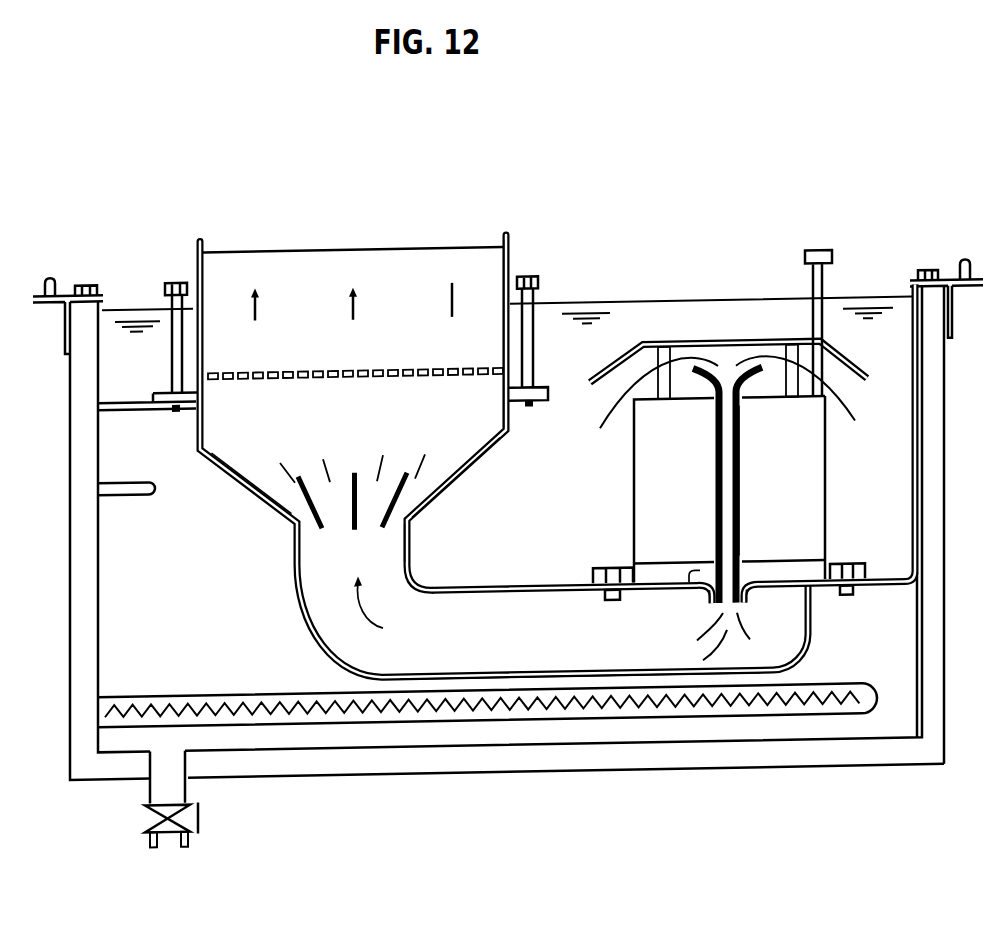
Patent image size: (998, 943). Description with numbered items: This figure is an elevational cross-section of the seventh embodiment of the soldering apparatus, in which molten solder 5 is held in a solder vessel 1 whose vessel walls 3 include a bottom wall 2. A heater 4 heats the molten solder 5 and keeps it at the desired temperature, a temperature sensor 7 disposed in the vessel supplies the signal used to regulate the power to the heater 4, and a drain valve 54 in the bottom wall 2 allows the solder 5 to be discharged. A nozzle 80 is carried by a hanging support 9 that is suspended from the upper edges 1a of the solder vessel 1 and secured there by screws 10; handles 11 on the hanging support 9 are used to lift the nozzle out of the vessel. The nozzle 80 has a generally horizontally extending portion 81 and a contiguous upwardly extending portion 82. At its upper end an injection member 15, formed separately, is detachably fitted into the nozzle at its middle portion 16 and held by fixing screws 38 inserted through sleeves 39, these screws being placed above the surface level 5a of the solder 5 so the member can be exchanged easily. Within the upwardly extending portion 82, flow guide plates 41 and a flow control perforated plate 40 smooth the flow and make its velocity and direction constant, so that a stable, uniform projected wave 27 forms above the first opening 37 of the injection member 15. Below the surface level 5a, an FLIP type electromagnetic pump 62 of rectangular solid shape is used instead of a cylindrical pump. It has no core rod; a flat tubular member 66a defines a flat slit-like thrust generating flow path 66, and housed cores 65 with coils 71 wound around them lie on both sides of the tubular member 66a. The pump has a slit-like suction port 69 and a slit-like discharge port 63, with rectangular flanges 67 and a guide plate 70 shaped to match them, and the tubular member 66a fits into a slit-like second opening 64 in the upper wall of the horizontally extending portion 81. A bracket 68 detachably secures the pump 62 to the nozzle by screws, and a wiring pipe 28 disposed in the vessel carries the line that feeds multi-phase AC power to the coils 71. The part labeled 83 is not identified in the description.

The solder vessel 1 is at (533, 557).
The upper edges of the solder vessel 1a is at (78, 306).
The bottom wall 2 is at (660, 766).
The vessel walls 3 is at (947, 380).
The heater 4 is at (175, 697).
The molten solder 5 is at (546, 498).
The surface level of the solder 5a is at (600, 302).
The temperature sensor 7 is at (127, 474).
The hanging support 9 is at (105, 357).
The screws 10 is at (80, 278).
The handles 11 is at (50, 269).
The injection member 15 is at (510, 265).
The middle portion 16 is at (497, 452).
The projected wave 27 is at (488, 437).
The wiring pipe 28 is at (825, 282).
The first opening 37 is at (295, 266).
The fixing screws 38 is at (168, 296).
The sleeves 39 is at (173, 275).
The flow control perforated plate 40 is at (290, 368).
The flow guide plates 41 is at (303, 496).
The drain valve 54 is at (203, 818).
The FLIP type electromagnetic pump 62 is at (725, 455).
The discharge port 63 is at (742, 634).
The second opening 64 is at (745, 604).
The housed cores 65 is at (808, 514).
The thrust generating flow path 66 is at (748, 484).
The flat tubular member 66a is at (741, 441).
The flanges 67 is at (688, 594).
The bracket 68 is at (650, 590).
The suction port 69 is at (728, 362).
The guide plate 70 is at (682, 343).
The coils 71 is at (787, 540).
The nozzle 80 is at (222, 487).
The horizontally extending portion 81 is at (673, 458).
The upwardly extending portion 82 is at (433, 506).
The duct bottom wall 83 is at (558, 672).